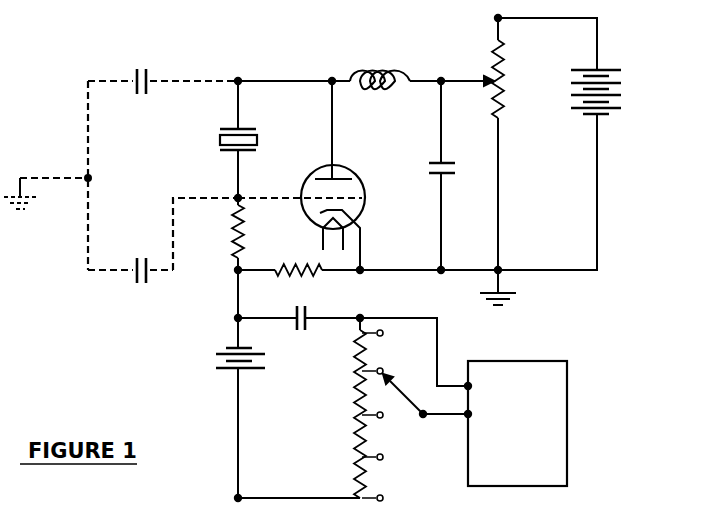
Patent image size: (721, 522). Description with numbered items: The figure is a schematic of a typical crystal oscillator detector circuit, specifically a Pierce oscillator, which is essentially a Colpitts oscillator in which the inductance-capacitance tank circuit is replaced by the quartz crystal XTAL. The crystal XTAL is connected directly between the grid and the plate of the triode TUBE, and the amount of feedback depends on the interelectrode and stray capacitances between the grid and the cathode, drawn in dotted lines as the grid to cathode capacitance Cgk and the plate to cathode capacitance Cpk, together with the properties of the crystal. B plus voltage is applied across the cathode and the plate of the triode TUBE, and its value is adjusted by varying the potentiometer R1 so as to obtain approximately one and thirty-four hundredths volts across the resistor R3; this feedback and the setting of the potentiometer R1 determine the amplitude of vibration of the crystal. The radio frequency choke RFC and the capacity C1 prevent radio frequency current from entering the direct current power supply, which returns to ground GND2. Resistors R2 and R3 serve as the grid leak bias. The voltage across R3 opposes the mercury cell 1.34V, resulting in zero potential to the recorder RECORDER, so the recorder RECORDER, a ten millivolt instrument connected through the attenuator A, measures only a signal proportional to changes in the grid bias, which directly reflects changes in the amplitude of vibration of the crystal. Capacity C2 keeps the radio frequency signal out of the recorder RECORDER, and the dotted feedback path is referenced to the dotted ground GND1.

The plate to cathode capacitance Cpk is at (138, 68).
The grid to cathode capacitance Cgk is at (139, 286).
The radio frequency choke RFC is at (389, 70).
The quartz crystal XTAL is at (238, 139).
The triode TUBE is at (333, 175).
The potentiometer R1 is at (507, 80).
The resistor R2 is at (235, 226).
The resistor R3 is at (296, 266).
The capacity C1 is at (428, 163).
The capacity C2 is at (299, 335).
The mercury cell 1.34V is at (214, 355).
The attenuator A is at (357, 421).
The recorder RECORDER is at (558, 427).
The ground (dashed) GND1 is at (20, 193).
The ground GND2 is at (498, 287).